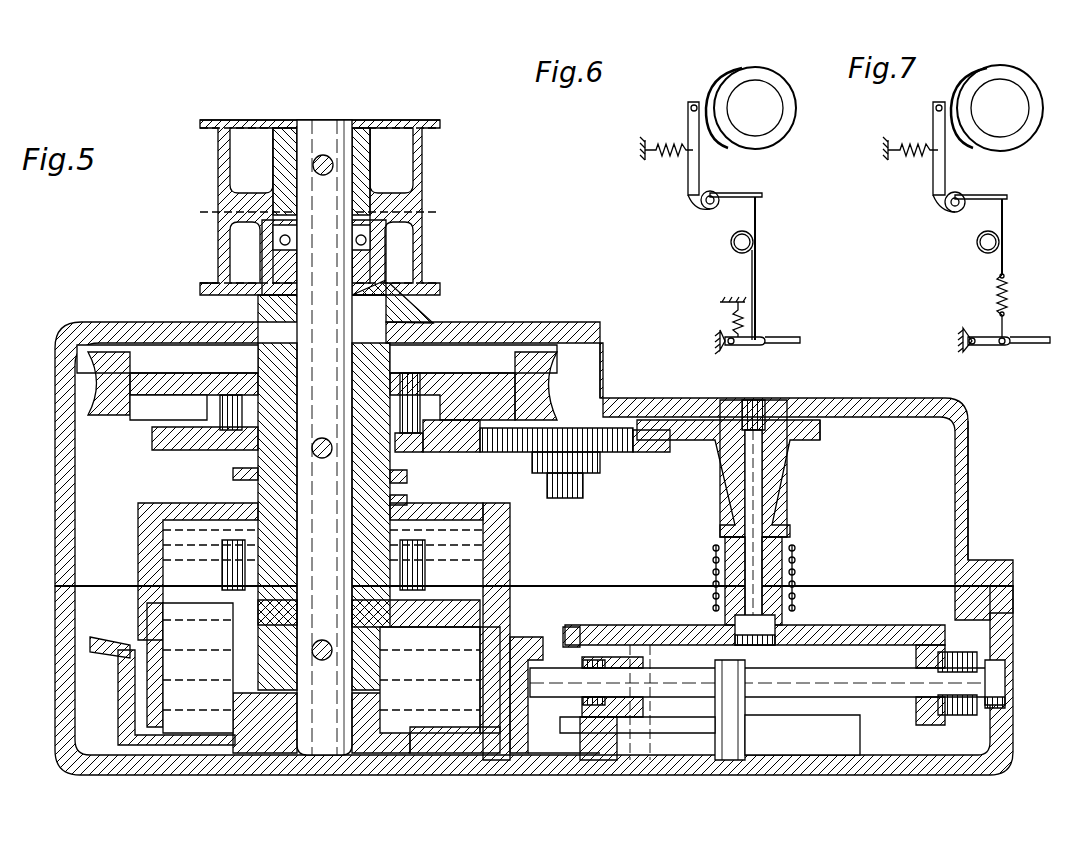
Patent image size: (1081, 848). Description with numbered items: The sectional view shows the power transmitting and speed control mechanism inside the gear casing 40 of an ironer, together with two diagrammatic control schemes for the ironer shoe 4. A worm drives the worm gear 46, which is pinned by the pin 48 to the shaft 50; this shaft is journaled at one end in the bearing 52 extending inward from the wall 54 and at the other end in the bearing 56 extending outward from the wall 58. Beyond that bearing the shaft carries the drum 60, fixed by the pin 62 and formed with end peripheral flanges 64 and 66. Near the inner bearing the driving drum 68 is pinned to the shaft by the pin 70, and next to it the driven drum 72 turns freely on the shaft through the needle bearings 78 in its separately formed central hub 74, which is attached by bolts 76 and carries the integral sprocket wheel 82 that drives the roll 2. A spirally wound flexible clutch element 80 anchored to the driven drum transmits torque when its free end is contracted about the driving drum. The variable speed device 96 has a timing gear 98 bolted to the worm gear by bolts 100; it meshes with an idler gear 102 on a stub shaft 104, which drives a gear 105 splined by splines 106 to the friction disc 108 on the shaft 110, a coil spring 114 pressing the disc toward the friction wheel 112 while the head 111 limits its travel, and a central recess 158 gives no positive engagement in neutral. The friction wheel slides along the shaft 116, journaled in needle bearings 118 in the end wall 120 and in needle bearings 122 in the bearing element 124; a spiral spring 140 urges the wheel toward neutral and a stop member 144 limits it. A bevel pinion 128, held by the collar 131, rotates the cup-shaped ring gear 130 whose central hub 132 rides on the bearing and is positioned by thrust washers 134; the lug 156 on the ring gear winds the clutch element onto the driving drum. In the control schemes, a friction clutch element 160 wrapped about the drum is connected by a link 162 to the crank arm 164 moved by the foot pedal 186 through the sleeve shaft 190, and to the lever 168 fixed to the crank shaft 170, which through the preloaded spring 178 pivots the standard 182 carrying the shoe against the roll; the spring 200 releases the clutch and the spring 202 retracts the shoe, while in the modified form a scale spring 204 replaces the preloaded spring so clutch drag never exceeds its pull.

In FIG. 6, the roll 2 is at (793, 92).
In FIG. 7, the roll 2 is at (1032, 90).
In FIG. 6, the shoe 4 is at (722, 72).
In FIG. 7, the shoe 4 is at (972, 70).
In FIG. 5, the gear casing 40 is at (49, 474).
In FIG. 5, the worm gear 46 is at (105, 388).
In FIG. 5, the pin 48 is at (322, 438).
In FIG. 5, the shaft 50 is at (335, 325).
In FIG. 5, the bearing 52 is at (345, 745).
In FIG. 5, the wall 54 is at (468, 770).
In FIG. 5, the bearing 56 is at (258, 310).
In FIG. 5, the wall 58 is at (520, 330).
In FIG. 5, the drum 60 is at (420, 182).
In FIG. 6, the drum 60 is at (731, 243).
In FIG. 7, the drum 60 is at (978, 250).
In FIG. 5, the pin 62 is at (323, 155).
In FIG. 5, the end peripheral flange 64 is at (205, 124).
In FIG. 5, the end peripheral flange 66 is at (205, 283).
In FIG. 5, the driving drum 68 is at (508, 590).
In FIG. 5, the pin 70 is at (312, 652).
In FIG. 5, the driven drum 72 is at (495, 503).
In FIG. 5, the central hub 74 is at (265, 512).
In FIG. 5, the bolts 76 is at (240, 590).
In FIG. 5, the needle bearings 78 is at (385, 500).
In FIG. 5, the flexible clutch element 80 is at (510, 545).
In FIG. 5, the sprocket wheel 82 is at (235, 475).
In FIG. 5, the variable speed device 96 is at (803, 507).
In FIG. 5, the timing gear 98 is at (455, 437).
In FIG. 5, the bolts 100 is at (412, 452).
In FIG. 5, the idler gear 102 is at (605, 440).
In FIG. 5, the stub shaft 104 is at (583, 488).
In FIG. 5, the gear 105 is at (830, 465).
In FIG. 5, the splines 106 is at (796, 556).
In FIG. 5, the friction disc 108 is at (900, 640).
In FIG. 5, the shaft 110 is at (765, 430).
In FIG. 5, the head 111 is at (712, 612).
In FIG. 5, the friction wheel 112 is at (940, 655).
In FIG. 5, the coil spring 114 is at (796, 575).
In FIG. 5, the shaft 116 is at (930, 690).
In FIG. 5, the needle bearings 118 is at (998, 708).
In FIG. 5, the end wall 120 is at (968, 492).
In FIG. 5, the needle bearings 122 is at (600, 705).
In FIG. 5, the bearing element 124 is at (615, 722).
In FIG. 5, the bevel pinion 128 is at (540, 640).
In FIG. 5, the ring gear 130 is at (130, 692).
In FIG. 5, the collar 131 is at (665, 710).
In FIG. 5, the central hub 132 is at (250, 740).
In FIG. 5, the thrust washers 134 is at (425, 700).
In FIG. 5, the spiral spring 140 is at (700, 720).
In FIG. 5, the stop member 144 is at (745, 715).
In FIG. 5, the lug 156 is at (535, 755).
In FIG. 5, the recess 158 is at (775, 640).
In FIG. 6, the friction clutch element 160 is at (745, 250).
In FIG. 7, the friction clutch element 160 is at (1004, 222).
In FIG. 6, the link 162 is at (758, 250).
In FIG. 6, the crank arm 164 is at (745, 345).
In FIG. 7, the crank arm 164 is at (995, 343).
In FIG. 6, the lever 168 is at (738, 190).
In FIG. 7, the lever 168 is at (988, 192).
In FIG. 6, the crank shaft 170 is at (700, 212).
In FIG. 7, the crank shaft 170 is at (947, 208).
In FIG. 6, the preloaded spring 178 is at (700, 205).
In FIG. 6, the standard 182 is at (688, 180).
In FIG. 7, the standard 182 is at (933, 184).
In FIG. 6, the foot pedal 186 is at (788, 337).
In FIG. 7, the foot pedal 186 is at (1034, 337).
In FIG. 6, the shaft 190 is at (720, 340).
In FIG. 7, the shaft 190 is at (968, 348).
In FIG. 6, the spring 200 is at (730, 312).
In FIG. 6, the spring 202 is at (664, 132).
In FIG. 7, the spring 202 is at (906, 140).
In FIG. 7, the scale spring 204 is at (1008, 292).